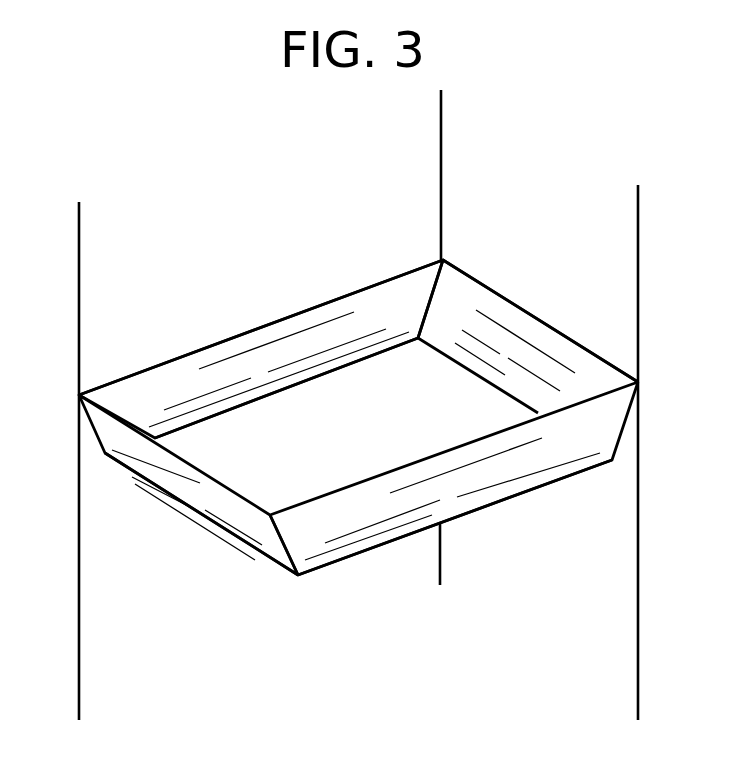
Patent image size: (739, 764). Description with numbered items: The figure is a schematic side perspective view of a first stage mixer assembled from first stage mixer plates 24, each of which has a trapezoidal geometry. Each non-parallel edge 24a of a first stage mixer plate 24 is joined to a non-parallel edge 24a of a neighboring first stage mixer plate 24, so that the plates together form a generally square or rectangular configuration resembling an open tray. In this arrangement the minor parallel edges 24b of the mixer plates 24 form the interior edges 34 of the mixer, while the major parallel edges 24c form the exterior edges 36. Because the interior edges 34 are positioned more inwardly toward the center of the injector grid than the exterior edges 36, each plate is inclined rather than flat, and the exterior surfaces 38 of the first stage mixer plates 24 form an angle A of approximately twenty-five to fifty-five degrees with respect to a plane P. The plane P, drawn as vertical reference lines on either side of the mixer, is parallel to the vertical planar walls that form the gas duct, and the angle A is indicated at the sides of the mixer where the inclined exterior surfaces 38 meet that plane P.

The first stage mixer plate 24 is at (543, 321).
The non-parallel edge 24a is at (284, 548).
The minor parallel edge 24b is at (330, 564).
The major parallel edge 24c is at (265, 326).
The interior edge 34 is at (223, 529).
The exterior edge 36 is at (495, 288).
The exterior surface 38 is at (188, 489).
The plane P is at (79, 248).
The angle A is at (96, 436).